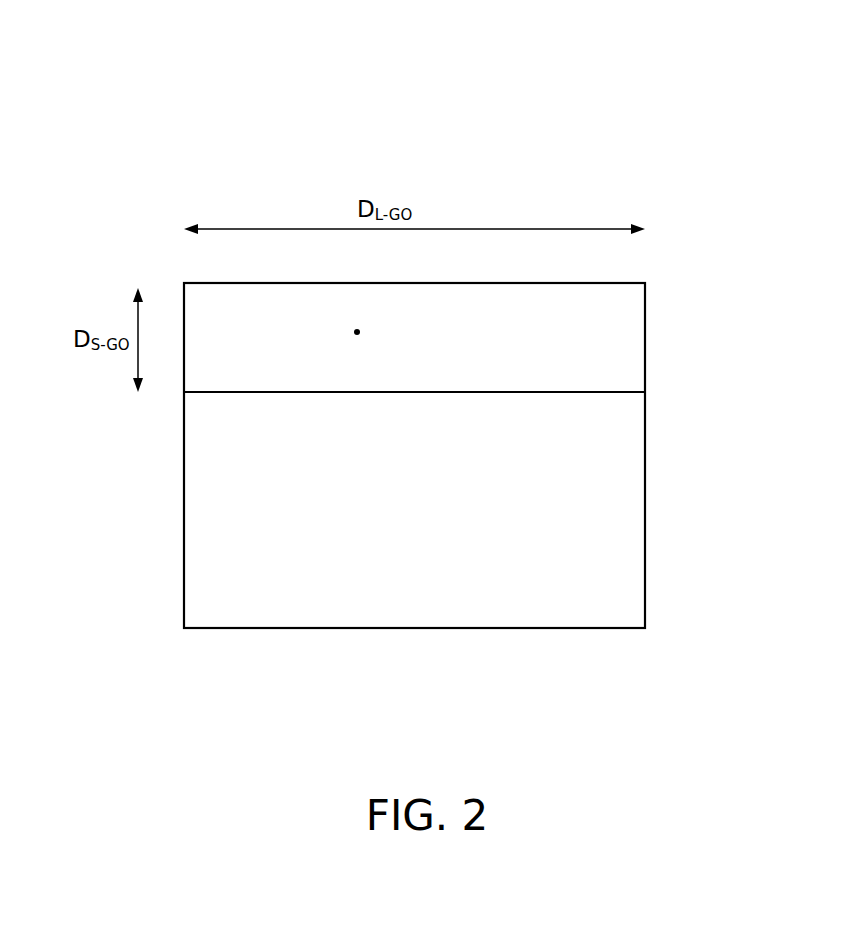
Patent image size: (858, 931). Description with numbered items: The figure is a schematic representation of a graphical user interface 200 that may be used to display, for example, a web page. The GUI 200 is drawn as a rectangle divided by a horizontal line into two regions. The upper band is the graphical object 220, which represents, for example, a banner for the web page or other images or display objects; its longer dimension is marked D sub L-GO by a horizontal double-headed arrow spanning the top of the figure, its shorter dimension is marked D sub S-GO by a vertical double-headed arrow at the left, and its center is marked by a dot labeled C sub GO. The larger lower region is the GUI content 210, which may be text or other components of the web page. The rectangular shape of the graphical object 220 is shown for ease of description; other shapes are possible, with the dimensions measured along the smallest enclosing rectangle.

The graphical user interface 200 is at (777, 87).
The GUI content 210 is at (397, 547).
The graphical object 220 is at (272, 334).